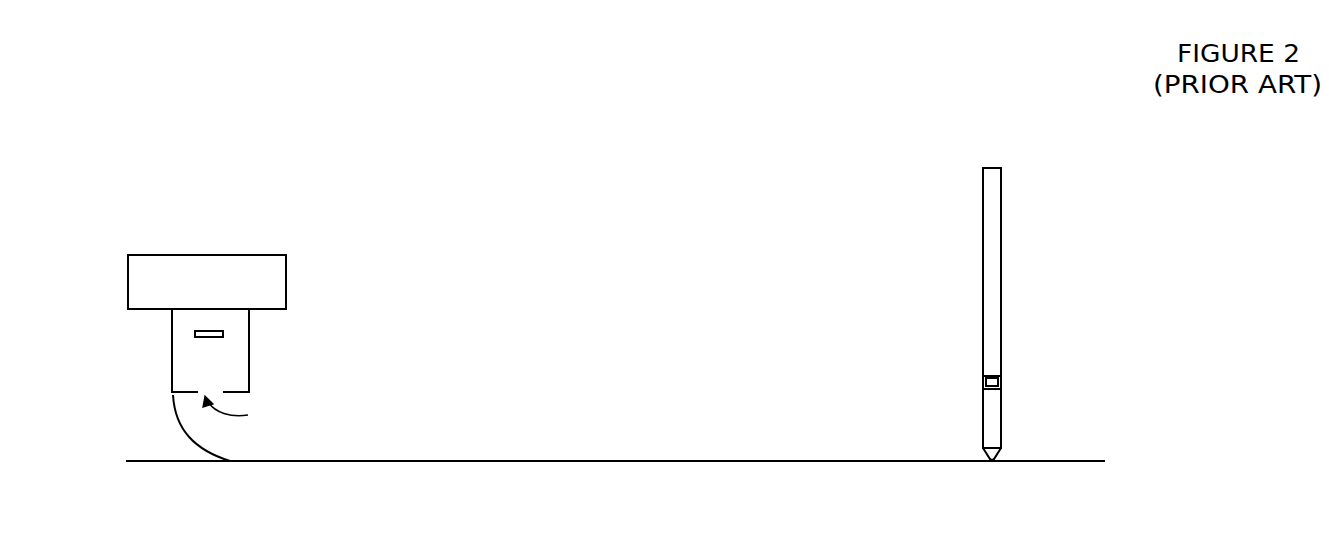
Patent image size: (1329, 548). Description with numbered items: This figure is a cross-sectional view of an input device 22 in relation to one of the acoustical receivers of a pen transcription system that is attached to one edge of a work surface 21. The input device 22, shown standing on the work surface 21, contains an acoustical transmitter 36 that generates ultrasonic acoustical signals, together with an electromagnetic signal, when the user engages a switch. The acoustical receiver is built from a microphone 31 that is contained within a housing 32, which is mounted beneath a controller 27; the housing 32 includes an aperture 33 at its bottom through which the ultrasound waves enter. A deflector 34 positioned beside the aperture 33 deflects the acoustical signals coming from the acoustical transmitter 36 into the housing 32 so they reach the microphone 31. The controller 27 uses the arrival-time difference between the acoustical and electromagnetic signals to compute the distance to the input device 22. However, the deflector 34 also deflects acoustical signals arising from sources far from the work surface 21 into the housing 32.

The work surface 21 is at (689, 463).
The input device 22 is at (990, 263).
The controller 27 is at (161, 263).
The microphone 31 is at (212, 329).
The housing 32 is at (235, 366).
The aperture 33 is at (243, 415).
The deflector 34 is at (183, 428).
The acoustical transmitter 36 is at (999, 383).